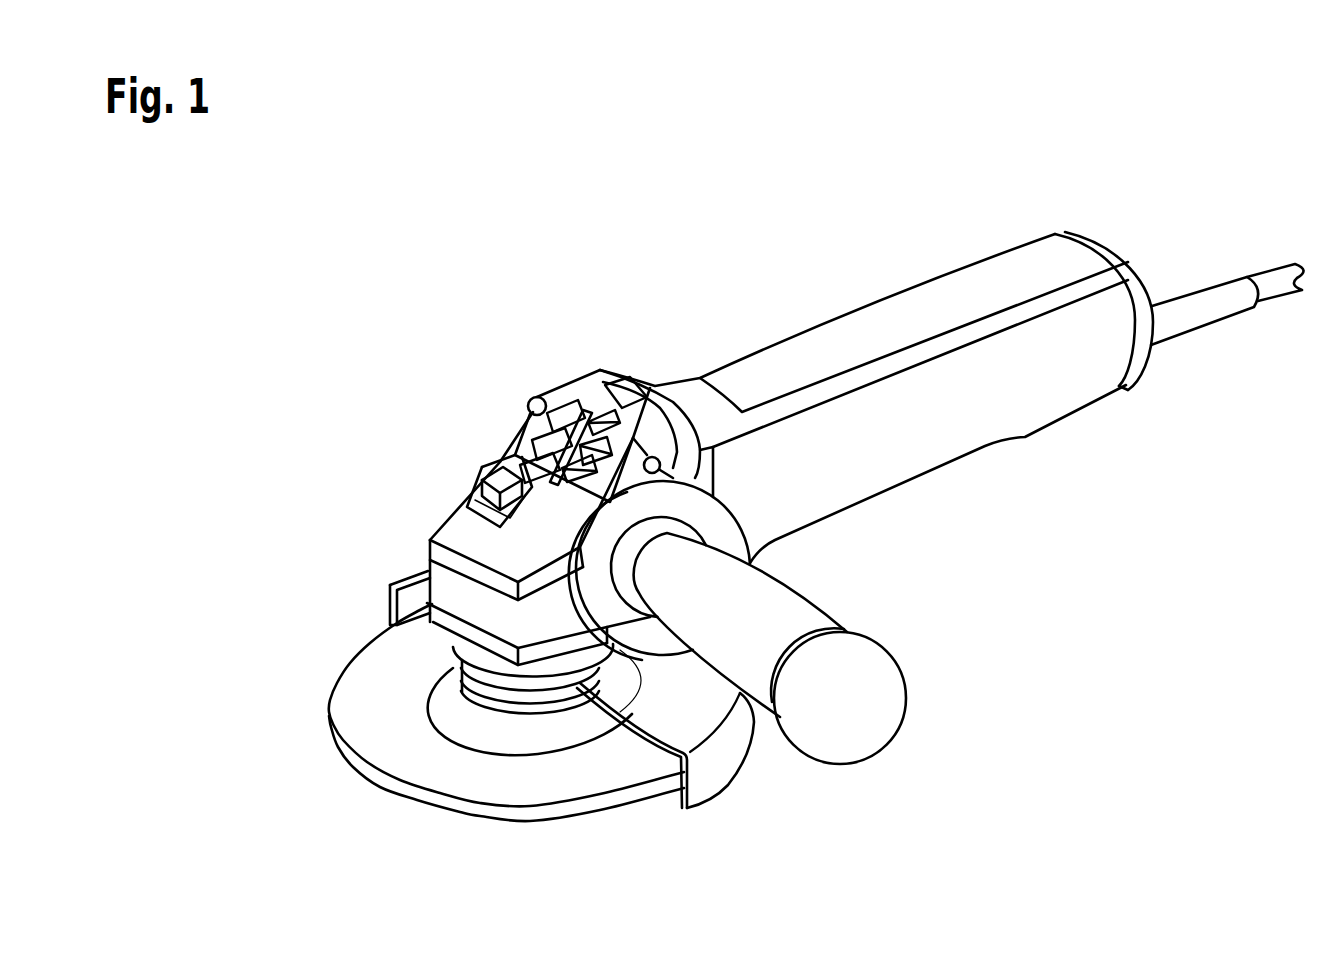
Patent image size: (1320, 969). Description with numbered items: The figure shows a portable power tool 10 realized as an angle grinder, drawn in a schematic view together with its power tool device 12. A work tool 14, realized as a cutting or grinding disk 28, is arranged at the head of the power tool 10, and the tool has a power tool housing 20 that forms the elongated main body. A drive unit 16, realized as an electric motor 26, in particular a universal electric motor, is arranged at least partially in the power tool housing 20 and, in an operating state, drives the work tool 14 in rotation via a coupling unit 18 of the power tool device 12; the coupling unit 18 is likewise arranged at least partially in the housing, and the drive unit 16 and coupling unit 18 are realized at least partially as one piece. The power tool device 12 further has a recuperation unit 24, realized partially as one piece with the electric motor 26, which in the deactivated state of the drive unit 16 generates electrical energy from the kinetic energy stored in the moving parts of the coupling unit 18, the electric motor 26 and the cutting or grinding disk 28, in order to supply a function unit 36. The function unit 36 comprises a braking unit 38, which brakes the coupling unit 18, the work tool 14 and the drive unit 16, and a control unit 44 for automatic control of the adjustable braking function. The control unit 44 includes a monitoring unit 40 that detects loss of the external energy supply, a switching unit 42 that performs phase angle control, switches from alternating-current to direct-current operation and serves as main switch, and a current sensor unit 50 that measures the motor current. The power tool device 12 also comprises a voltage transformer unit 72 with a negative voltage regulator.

The power tool 10 is at (575, 248).
The power tool device 12 is at (473, 325).
The work tool 14 is at (350, 677).
The drive unit 16 is at (407, 487).
The coupling unit 18 is at (337, 587).
The power tool housing 20 is at (1050, 403).
The recuperation unit 24 is at (427, 427).
The electric motor 26 is at (453, 393).
The cutting or grinding disk 28 is at (530, 699).
The function unit 36 is at (337, 463).
The braking unit 38 is at (481, 476).
The monitoring unit 40 is at (502, 370).
The switching unit 42 is at (533, 360).
The control unit 44 is at (558, 360).
The current sensor unit 50 is at (600, 360).
The voltage transformer unit 72 is at (655, 337).